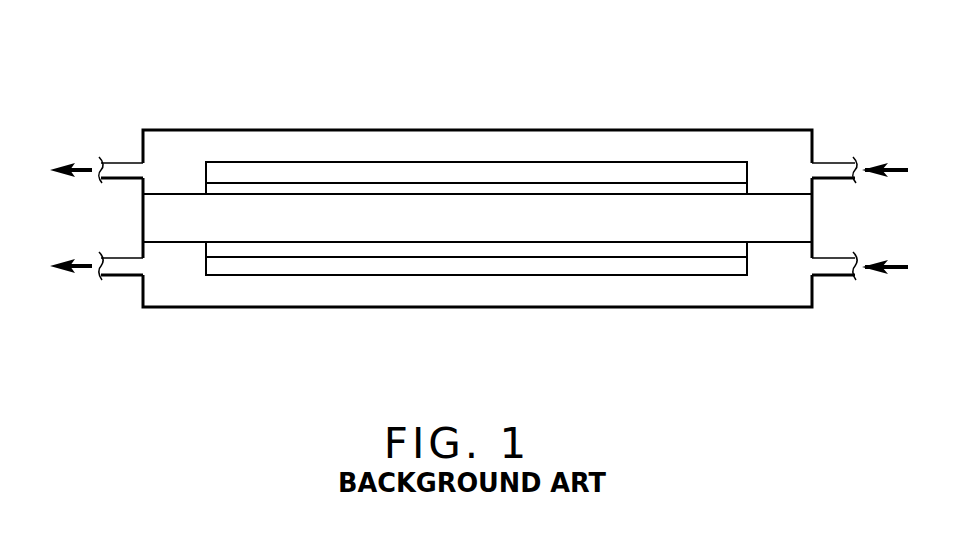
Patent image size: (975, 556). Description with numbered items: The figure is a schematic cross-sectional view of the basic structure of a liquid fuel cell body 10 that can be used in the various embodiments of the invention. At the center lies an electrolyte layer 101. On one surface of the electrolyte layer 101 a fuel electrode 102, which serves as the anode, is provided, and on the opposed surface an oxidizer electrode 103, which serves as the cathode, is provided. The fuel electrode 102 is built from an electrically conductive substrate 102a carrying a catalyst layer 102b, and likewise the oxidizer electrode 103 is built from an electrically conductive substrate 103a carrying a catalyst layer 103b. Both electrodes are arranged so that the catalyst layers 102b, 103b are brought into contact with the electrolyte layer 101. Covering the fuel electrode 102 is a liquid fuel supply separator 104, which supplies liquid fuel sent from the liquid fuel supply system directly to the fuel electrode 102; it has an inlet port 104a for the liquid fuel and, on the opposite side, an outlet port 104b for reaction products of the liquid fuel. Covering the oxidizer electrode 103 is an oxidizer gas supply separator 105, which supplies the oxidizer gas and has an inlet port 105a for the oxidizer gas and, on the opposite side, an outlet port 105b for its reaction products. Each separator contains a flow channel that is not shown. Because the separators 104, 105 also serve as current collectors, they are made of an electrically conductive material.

The liquid fuel cell body 10 is at (629, 106).
The electrolyte layer 101 is at (803, 222).
The fuel electrode 102 is at (721, 160).
The electrically conductive substrate 102a is at (539, 172).
The catalyst layer 102b is at (432, 178).
The oxidizer electrode 103 is at (669, 278).
The electrically conductive substrate 103a is at (441, 268).
The catalyst layer 103b is at (548, 248).
The liquid fuel supply separator 104 is at (281, 128).
The inlet port 104a is at (835, 156).
The outlet port 104b is at (120, 150).
The oxidizer gas supply separator 105 is at (284, 310).
The inlet port 105a is at (835, 280).
The outlet port 105b is at (118, 282).